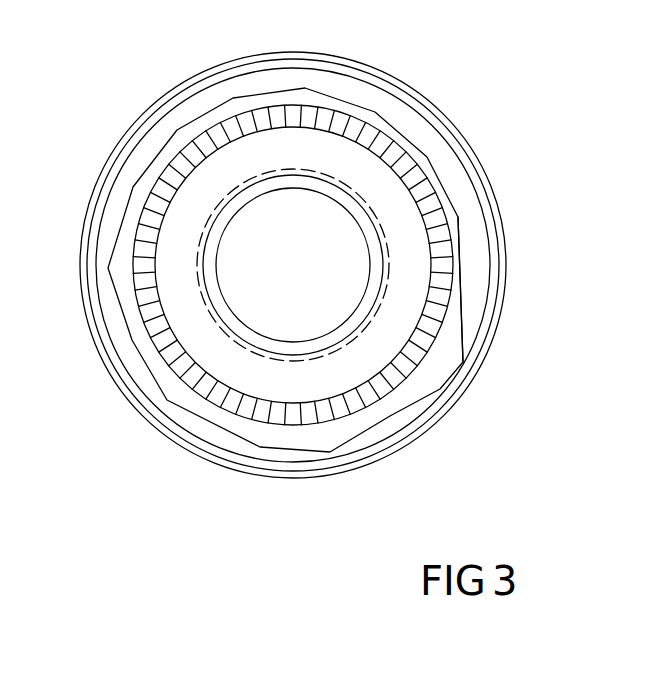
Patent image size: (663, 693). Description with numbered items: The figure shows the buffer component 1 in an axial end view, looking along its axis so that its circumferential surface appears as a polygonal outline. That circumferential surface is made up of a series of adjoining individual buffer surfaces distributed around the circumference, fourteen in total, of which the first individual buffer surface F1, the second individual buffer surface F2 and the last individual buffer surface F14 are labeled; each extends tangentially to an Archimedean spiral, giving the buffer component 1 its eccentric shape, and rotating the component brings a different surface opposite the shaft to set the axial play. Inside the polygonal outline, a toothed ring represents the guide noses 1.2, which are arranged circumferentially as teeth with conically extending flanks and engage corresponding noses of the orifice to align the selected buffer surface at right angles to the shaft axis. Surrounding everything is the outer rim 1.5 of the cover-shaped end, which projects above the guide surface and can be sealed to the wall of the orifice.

The buffer component 1 is at (250, 433).
The guide noses 1.2 is at (373, 397).
The outer rim 1.5 is at (393, 77).
The individual buffer surface F1 is at (462, 263).
The individual buffer surface F2 is at (440, 183).
The individual buffer surface F14 is at (438, 388).